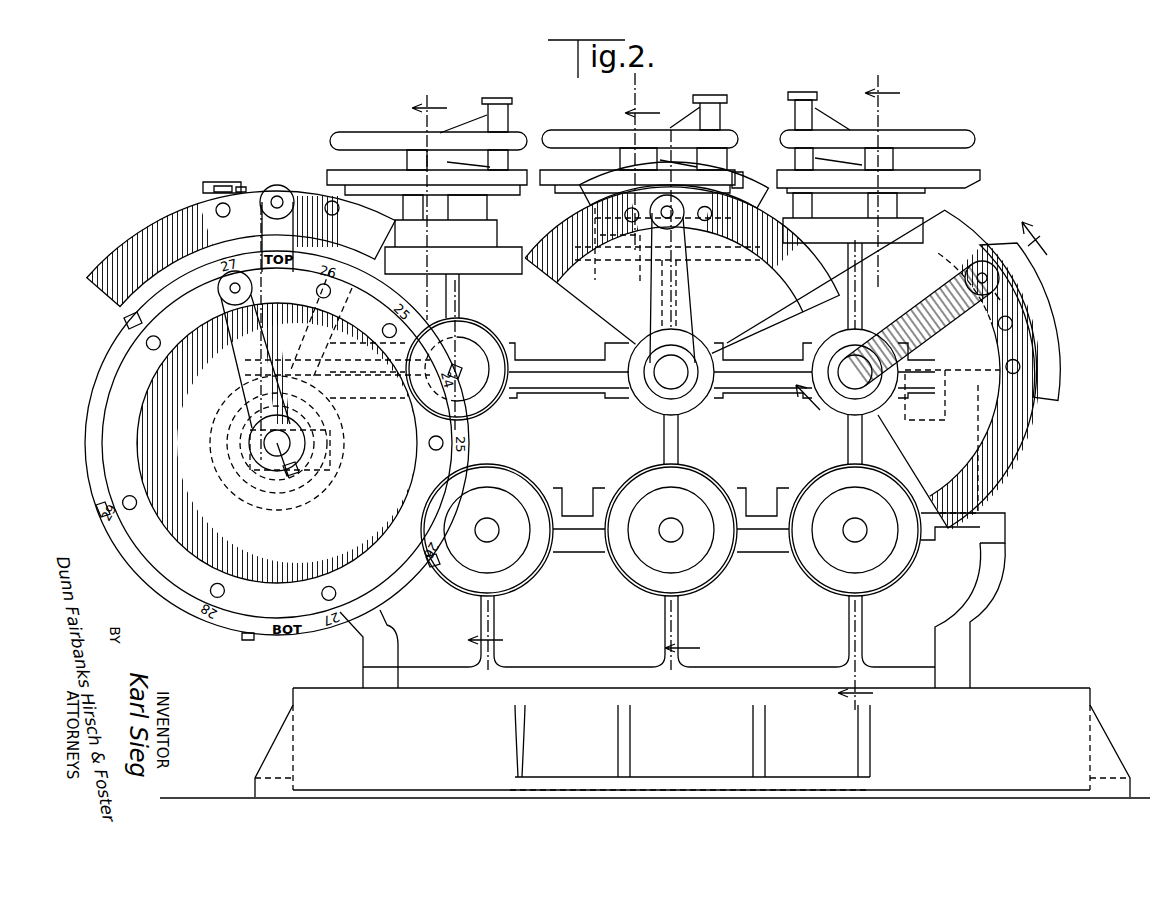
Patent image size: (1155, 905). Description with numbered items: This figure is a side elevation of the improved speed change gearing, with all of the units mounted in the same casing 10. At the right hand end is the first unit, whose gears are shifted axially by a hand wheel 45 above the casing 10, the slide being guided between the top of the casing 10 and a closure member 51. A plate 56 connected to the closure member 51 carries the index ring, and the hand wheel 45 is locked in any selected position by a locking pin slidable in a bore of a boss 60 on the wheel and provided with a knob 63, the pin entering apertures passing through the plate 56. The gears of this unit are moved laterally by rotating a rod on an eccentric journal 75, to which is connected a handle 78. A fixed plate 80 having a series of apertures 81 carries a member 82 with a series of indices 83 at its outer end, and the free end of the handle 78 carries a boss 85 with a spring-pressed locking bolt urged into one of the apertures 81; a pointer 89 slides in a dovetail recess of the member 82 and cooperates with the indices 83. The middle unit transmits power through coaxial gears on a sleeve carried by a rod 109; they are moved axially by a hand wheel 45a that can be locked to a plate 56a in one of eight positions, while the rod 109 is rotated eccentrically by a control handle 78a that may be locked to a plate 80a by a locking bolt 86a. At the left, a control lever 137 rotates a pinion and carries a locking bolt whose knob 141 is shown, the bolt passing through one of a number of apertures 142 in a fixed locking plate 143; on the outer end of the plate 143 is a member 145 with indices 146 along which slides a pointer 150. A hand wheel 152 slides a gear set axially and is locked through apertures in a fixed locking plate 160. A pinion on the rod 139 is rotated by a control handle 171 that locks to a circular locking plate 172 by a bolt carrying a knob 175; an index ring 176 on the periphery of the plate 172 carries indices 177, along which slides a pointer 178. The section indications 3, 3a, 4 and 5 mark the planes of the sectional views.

The casing 10 is at (958, 578).
The hand wheel 152 is at (358, 131).
The section line 5 is at (465, 367).
The member 145 is at (225, 185).
The pointer 150 is at (277, 185).
The knob 141 is at (241, 188).
The fixed locking plate 160 is at (340, 170).
The indices 146 is at (203, 187).
The apertures 142 is at (216, 208).
The fixed locking plate 143 is at (123, 252).
The control lever 137 is at (262, 237).
The pointer 178 is at (126, 320).
The knob 175 is at (222, 300).
The control handle 171 is at (238, 355).
The circular locking plate 172 is at (120, 378).
The index ring 176 is at (94, 413).
The indices 177 is at (100, 508).
The rod 139 is at (272, 452).
The hand wheel 45a is at (570, 130).
The section line 4 is at (665, 371).
The knob 63 is at (805, 92).
The boss 60 is at (795, 112).
The section line 3 is at (869, 389).
The hand wheel 45 is at (960, 130).
The plate 56a is at (740, 170).
The plate 56 is at (982, 178).
The closure member 51 is at (910, 225).
The section line 3a is at (933, 327).
The member 82 is at (1000, 283).
The boss 85 is at (1000, 298).
The indices 83 is at (1035, 300).
The apertures 81 is at (1012, 328).
The pointer 89 is at (1020, 368).
The fixed plate 80 is at (1012, 443).
The handle 78 is at (915, 300).
The journal 75 is at (848, 362).
The locking bolt 86a is at (667, 212).
The plate 80a is at (590, 290).
The control handle 78a is at (655, 312).
The rod 109 is at (665, 378).